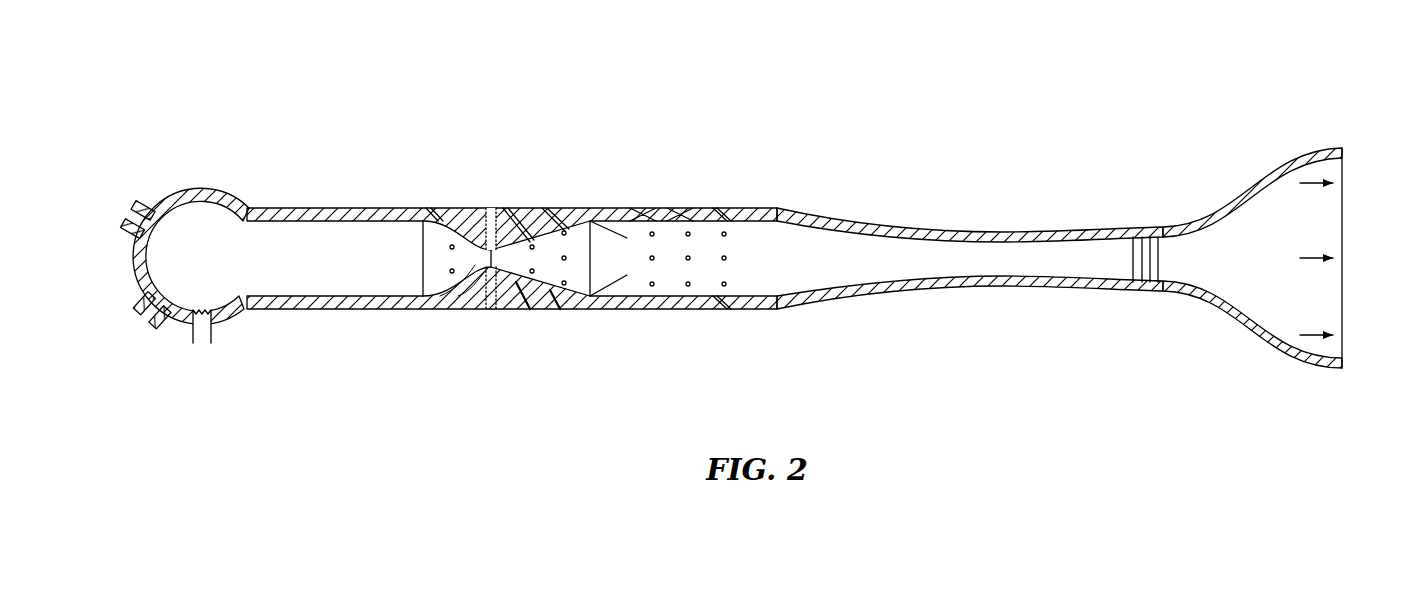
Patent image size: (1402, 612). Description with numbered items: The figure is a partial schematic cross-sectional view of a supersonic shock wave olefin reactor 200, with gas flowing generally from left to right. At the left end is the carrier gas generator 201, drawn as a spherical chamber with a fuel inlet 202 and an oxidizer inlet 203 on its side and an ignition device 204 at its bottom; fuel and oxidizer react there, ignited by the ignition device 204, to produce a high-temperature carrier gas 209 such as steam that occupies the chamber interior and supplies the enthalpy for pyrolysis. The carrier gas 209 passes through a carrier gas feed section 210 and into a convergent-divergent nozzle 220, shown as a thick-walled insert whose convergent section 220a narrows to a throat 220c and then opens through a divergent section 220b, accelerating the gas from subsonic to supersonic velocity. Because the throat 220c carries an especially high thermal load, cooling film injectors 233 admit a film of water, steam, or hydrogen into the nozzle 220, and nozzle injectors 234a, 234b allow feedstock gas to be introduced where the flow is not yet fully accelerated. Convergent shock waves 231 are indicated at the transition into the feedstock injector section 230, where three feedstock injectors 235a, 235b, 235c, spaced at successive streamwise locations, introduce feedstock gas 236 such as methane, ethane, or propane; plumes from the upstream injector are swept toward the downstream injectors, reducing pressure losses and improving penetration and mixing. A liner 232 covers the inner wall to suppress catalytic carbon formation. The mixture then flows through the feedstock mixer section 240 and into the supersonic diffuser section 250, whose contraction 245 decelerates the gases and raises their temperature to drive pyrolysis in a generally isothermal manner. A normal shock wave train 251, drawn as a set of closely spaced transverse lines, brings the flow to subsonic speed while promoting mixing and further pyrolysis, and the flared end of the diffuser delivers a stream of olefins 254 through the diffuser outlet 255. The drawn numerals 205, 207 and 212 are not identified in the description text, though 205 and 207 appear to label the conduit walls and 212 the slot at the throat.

The supersonic shock wave olefin reactor 200 is at (759, 88).
The carrier gas generator 201 is at (206, 186).
The fuel inlet 202 is at (121, 210).
The oxidizer inlet 203 is at (140, 323).
The ignition device 204 is at (202, 347).
The conduit 205 is at (315, 314).
The conduit lower wall 207 is at (320, 272).
The carrier gas 209 is at (219, 216).
The carrier gas feed section 210 is at (423, 200).
The slot 212 is at (492, 207).
The convergent-divergent nozzle 220 is at (423, 348).
The convergent section 220a is at (463, 274).
The divergent section 220b is at (537, 280).
The throat 220c is at (489, 260).
The feedstock injector section 230 is at (738, 200).
The convergent shock waves 231 is at (620, 293).
The liner 232 is at (765, 300).
The cooling film injectors 233 is at (453, 243).
The nozzle injector 234a is at (532, 243).
The nozzle injector 234b is at (565, 229).
The upstream feedstock injector 235a is at (653, 290).
The downstream feedstock injector 235b is at (689, 290).
The downstream feedstock injector 235c is at (725, 290).
The feedstock gas 236 is at (713, 268).
The feedstock mixer section 240 is at (743, 200).
The contraction 245 is at (907, 220).
The supersonic diffuser section 250 is at (880, 378).
The normal shock wave train 251 is at (1164, 240).
The stream of olefins 254 is at (1300, 335).
The diffuser outlet 255 is at (1348, 168).